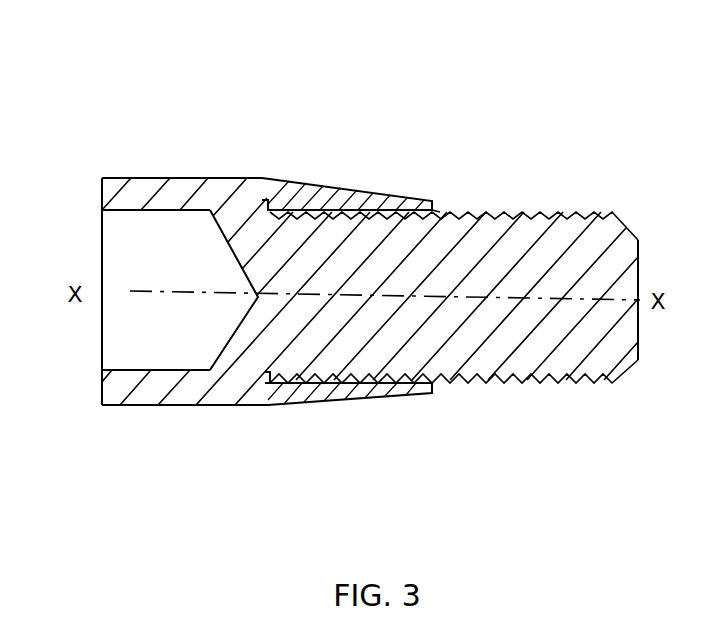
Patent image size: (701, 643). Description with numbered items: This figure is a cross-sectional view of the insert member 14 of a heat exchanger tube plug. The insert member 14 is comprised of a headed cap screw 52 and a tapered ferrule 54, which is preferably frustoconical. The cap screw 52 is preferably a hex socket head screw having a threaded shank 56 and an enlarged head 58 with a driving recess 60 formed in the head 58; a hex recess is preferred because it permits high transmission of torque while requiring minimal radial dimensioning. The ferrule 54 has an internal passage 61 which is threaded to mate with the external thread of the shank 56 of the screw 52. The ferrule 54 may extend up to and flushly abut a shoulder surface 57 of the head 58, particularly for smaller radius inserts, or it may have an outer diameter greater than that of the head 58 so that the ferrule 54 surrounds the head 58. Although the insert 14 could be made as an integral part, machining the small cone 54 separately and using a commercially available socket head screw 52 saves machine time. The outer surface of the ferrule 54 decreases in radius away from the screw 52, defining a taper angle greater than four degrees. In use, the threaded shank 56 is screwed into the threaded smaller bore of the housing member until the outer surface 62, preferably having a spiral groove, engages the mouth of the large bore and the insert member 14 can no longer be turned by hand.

The insert member 14 is at (400, 92).
The headed cap screw 52 is at (100, 202).
The tapered ferrule 54 is at (292, 190).
The threaded shank 56 is at (532, 212).
The shoulder surface 57 is at (265, 391).
The enlarged head 58 is at (172, 178).
The driving recess 60 is at (112, 245).
The internal passage 61 is at (409, 226).
The outer surface 62 is at (396, 400).